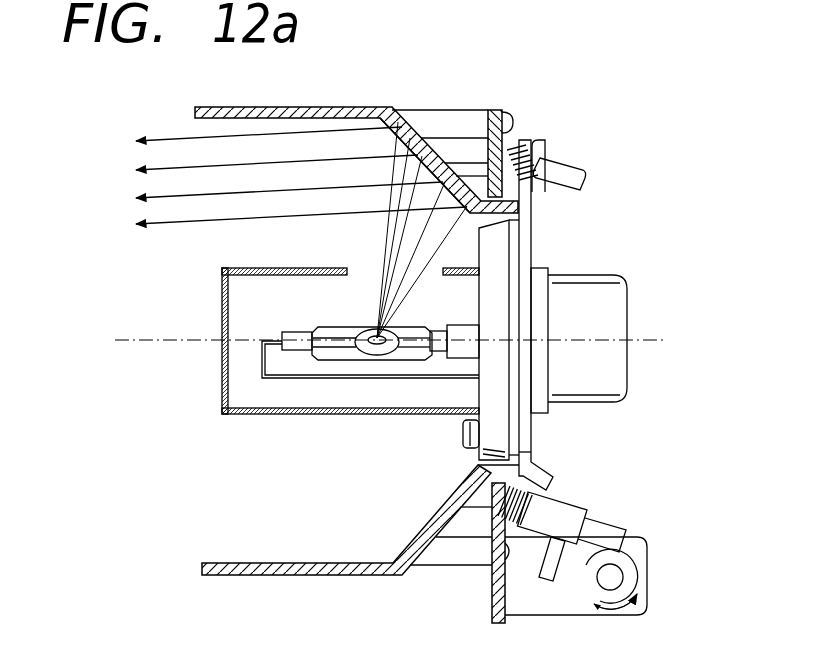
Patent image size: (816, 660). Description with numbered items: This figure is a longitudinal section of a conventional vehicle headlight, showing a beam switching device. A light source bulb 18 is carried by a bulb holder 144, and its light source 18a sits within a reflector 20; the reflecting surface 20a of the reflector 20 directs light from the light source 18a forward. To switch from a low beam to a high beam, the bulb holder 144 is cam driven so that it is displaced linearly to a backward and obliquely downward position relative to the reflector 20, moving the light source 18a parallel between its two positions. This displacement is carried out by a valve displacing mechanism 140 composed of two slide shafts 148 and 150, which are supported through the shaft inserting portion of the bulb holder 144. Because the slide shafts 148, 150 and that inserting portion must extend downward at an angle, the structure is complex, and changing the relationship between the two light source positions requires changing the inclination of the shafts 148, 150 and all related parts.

The reflector 20 is at (432, 125).
The reflecting surface 20a is at (404, 164).
The light source bulb 18 is at (324, 321).
The light source 18a is at (377, 336).
The valve displacing mechanism 140 is at (604, 468).
The bulb holder 144 is at (546, 250).
The slide shaft 148 is at (571, 171).
The slide shaft 150 is at (614, 521).